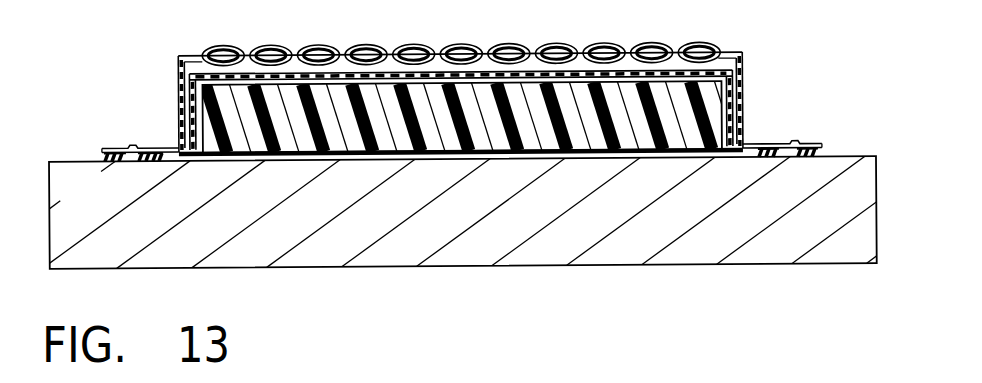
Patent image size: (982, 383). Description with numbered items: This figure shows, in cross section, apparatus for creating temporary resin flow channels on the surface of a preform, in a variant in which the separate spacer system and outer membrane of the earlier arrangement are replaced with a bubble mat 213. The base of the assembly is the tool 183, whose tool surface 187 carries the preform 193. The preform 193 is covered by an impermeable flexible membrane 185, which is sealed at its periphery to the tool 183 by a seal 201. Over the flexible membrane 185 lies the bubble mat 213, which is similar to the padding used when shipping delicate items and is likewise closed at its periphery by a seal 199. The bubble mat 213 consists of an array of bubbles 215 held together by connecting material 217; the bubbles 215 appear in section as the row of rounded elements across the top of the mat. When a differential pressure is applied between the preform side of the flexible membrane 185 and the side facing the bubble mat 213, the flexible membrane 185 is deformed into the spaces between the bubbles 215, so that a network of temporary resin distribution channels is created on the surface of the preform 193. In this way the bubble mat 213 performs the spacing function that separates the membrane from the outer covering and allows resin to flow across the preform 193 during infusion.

The tool 183 is at (320, 246).
The impermeable flexible membrane 185 is at (738, 153).
The tool surface 187 is at (846, 152).
The preform 193 is at (427, 133).
The seal 199 is at (123, 163).
The seal 201 is at (153, 163).
The bubble mat 213 is at (750, 60).
The bubbles 215 is at (558, 45).
The connecting material 217 is at (297, 45).